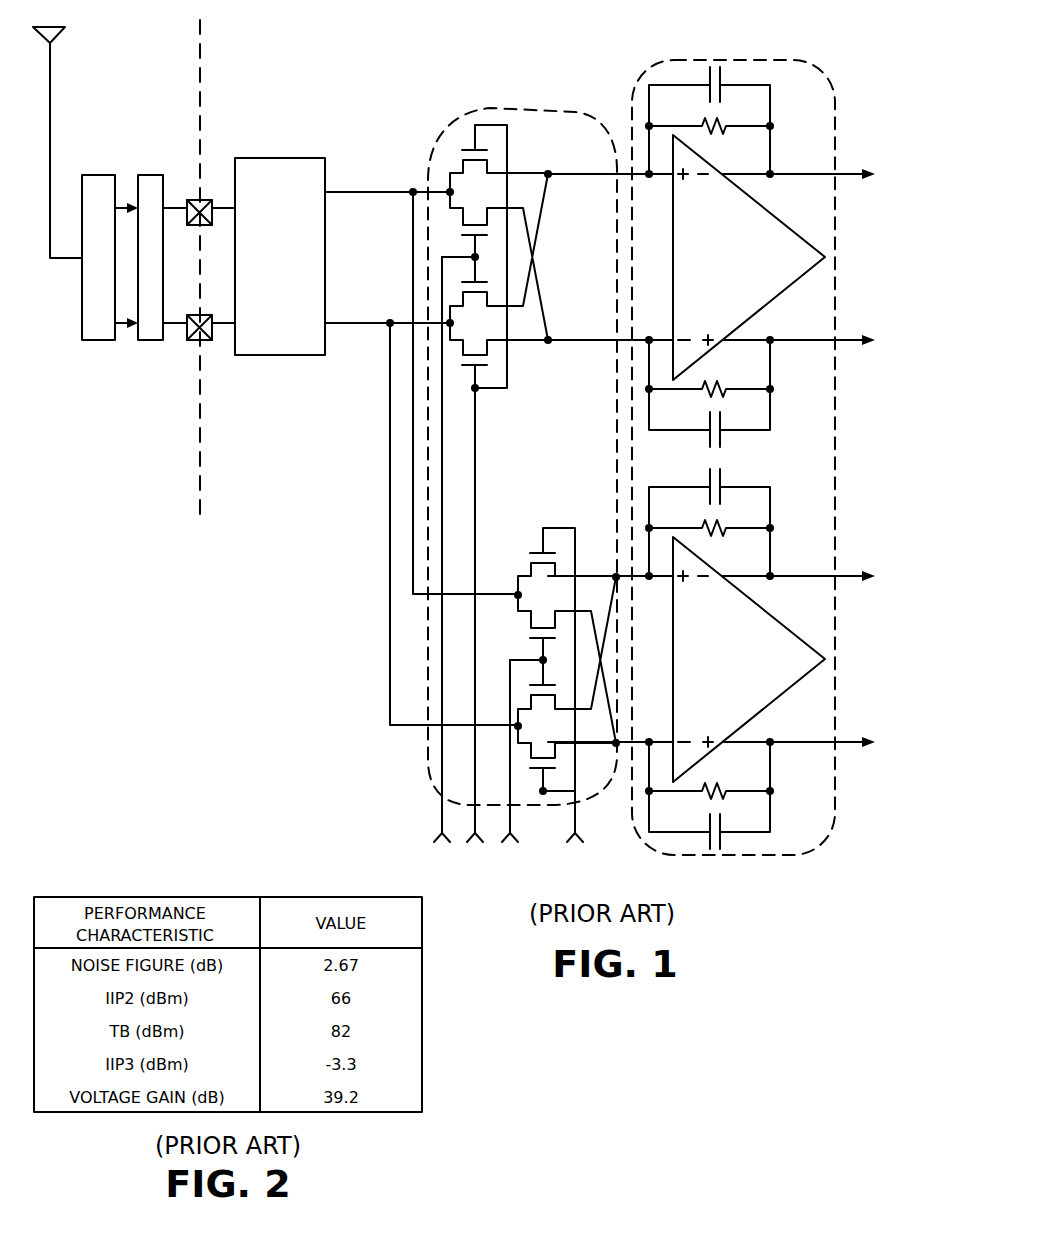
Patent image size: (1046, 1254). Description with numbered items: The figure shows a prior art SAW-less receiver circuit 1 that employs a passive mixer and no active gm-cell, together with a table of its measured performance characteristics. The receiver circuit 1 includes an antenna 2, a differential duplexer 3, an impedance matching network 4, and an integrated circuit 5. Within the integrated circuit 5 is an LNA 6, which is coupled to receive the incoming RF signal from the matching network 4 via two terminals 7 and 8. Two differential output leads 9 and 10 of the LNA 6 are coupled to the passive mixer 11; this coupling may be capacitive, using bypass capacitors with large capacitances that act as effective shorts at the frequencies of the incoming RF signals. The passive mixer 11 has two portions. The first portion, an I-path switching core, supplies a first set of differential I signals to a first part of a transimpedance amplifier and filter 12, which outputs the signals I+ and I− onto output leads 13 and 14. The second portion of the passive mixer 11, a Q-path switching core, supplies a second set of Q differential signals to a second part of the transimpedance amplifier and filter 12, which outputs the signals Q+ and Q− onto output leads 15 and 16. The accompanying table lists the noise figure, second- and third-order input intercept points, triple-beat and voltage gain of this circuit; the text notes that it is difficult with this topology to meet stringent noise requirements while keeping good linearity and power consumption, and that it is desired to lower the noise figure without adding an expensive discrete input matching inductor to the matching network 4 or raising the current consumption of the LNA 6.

The receiver circuit 1 is at (414, 55).
The antenna 2 is at (52, 62).
The differential duplexer 3 is at (98, 175).
The impedance matching network 4 is at (150, 341).
The integrated circuit 5 is at (213, 516).
The LNA 6 is at (281, 218).
The terminal 7 is at (205, 200).
The terminal 8 is at (205, 315).
The differential output lead 9 is at (331, 194).
The differential output lead 10 is at (331, 325).
The passive mixer 11 is at (486, 107).
The transimpedance amplifier and filter 12 is at (695, 60).
The output lead 13 is at (849, 171).
The output lead 14 is at (849, 336).
The output lead 15 is at (849, 578).
The output lead 16 is at (849, 743).